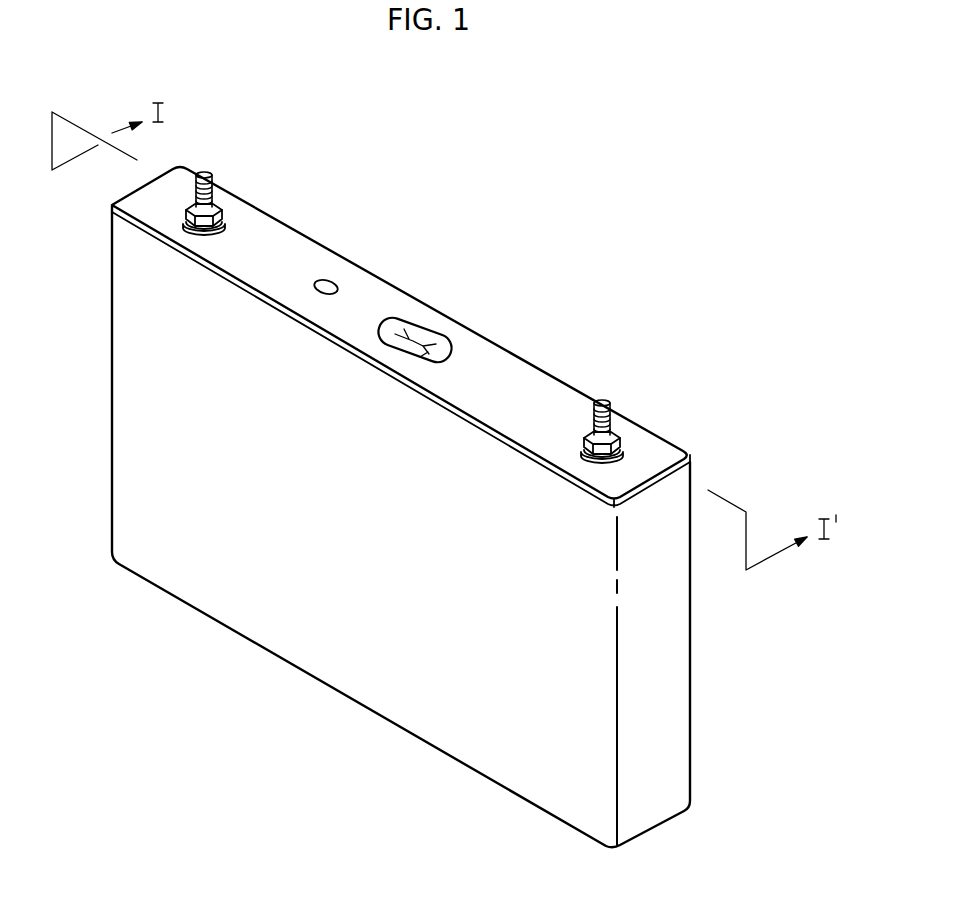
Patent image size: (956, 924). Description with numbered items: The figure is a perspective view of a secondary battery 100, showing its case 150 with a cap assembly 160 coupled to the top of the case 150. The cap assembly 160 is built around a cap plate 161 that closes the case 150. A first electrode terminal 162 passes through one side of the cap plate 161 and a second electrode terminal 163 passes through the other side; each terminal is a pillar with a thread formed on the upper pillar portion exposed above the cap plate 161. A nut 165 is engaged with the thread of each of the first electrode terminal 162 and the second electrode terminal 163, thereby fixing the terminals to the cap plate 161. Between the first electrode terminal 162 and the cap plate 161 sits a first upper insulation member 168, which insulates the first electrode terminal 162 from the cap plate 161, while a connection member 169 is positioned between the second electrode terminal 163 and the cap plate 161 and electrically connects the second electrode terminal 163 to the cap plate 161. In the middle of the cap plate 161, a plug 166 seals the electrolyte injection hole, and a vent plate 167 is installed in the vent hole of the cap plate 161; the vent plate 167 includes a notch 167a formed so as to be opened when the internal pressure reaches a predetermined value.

The secondary battery 100 is at (448, 148).
The case 150 is at (340, 673).
The cap assembly 160 is at (538, 360).
The cap plate 161 is at (378, 298).
The first electrode terminal 162 is at (602, 400).
The second electrode terminal 163 is at (205, 176).
The nut 165 is at (222, 208).
The plug 166 is at (330, 282).
The vent plate 167 is at (417, 323).
The notch 167a is at (425, 337).
The first upper insulation member 168 is at (622, 445).
The connection member 169 is at (227, 227).